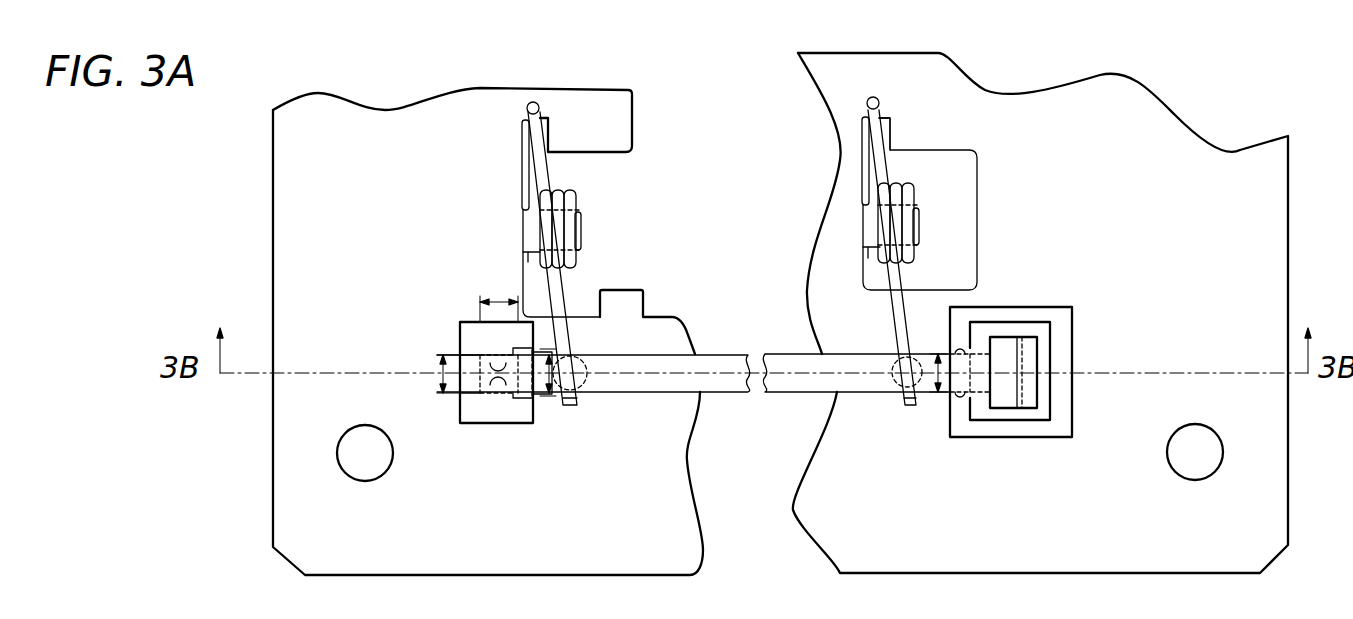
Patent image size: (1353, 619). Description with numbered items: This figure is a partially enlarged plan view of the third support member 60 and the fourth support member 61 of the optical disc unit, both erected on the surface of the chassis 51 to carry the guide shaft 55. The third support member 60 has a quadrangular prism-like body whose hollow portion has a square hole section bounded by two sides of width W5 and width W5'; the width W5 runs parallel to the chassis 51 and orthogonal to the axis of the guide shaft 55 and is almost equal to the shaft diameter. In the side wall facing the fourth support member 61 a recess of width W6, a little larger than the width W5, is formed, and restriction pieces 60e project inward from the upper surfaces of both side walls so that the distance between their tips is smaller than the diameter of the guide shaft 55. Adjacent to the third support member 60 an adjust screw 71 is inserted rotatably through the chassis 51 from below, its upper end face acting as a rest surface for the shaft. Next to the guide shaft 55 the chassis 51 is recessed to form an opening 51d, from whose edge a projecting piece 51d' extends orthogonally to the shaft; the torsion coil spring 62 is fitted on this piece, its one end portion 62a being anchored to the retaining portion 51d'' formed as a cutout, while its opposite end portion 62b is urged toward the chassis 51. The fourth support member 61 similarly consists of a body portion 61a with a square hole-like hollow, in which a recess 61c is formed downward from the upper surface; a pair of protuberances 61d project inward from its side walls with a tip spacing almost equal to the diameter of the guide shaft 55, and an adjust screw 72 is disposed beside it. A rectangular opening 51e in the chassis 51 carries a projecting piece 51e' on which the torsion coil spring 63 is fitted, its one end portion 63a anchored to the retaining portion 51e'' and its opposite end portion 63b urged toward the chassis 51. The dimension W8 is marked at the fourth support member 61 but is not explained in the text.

The chassis 51 is at (835, 497).
The opening 51d is at (614, 216).
The projecting piece 51d' is at (603, 229).
The retaining portion 51d'' is at (623, 134).
The rectangular opening 51e is at (956, 202).
The projecting piece 51e' is at (959, 223).
The retaining portion 51e'' is at (930, 132).
The guide shaft 55 is at (727, 356).
The third support member 60 is at (464, 374).
The restriction pieces 60e is at (479, 360).
The fourth support member 61 is at (1050, 381).
The body portion 61a is at (1045, 434).
The recess 61c is at (974, 387).
The protuberances 61d is at (961, 348).
The torsion coil spring 62 is at (580, 265).
The one end portion 62a is at (541, 116).
The opposite end portion 62b is at (571, 407).
The torsion coil spring 63 is at (872, 283).
The one end portion 63a is at (880, 114).
The opposite end portion 63b is at (908, 406).
The adjust screw 71 is at (586, 385).
The adjust screw 72 is at (896, 386).
The width W5 is at (406, 361).
The width W5' is at (493, 275).
The width W6 is at (551, 370).
The shaft width dimension W8 is at (935, 393).